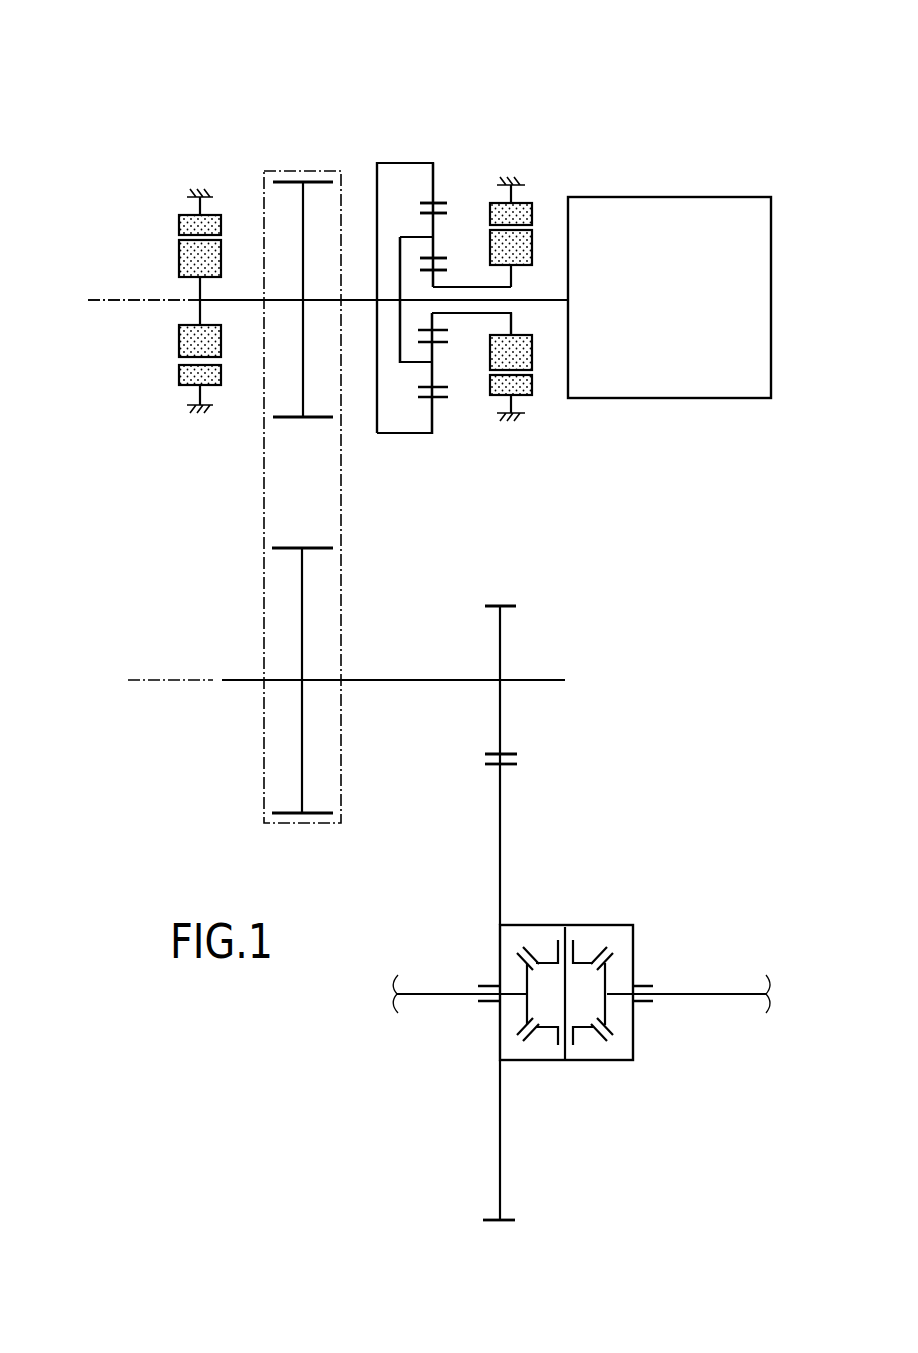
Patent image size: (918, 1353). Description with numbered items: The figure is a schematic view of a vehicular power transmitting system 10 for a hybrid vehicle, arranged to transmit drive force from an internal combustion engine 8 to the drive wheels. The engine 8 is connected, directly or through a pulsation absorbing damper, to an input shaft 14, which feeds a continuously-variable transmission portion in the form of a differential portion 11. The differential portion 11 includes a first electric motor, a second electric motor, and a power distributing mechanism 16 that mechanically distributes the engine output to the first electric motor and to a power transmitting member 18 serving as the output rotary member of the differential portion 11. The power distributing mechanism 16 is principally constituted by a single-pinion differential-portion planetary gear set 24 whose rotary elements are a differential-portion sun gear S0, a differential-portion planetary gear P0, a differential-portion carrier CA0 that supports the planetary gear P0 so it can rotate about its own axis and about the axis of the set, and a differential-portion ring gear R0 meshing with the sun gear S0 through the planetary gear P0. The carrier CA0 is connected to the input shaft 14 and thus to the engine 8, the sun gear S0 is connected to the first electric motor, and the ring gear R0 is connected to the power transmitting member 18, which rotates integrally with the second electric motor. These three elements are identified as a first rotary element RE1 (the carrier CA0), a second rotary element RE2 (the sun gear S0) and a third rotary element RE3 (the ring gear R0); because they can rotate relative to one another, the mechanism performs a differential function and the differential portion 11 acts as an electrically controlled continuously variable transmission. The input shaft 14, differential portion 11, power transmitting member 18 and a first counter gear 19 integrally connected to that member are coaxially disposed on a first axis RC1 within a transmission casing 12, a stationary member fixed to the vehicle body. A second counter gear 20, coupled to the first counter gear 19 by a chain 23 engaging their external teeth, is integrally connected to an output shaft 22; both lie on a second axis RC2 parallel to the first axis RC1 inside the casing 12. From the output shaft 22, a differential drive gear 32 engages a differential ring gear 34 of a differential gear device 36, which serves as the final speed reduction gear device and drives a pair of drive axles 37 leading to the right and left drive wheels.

The internal combustion engine 8 is at (675, 213).
The vehicular power transmitting system 10 is at (72, 38).
The differential portion 11 is at (545, 56).
The transmission casing 12 is at (203, 192).
The input shaft 14 is at (560, 299).
The power distributing mechanism 16 is at (435, 81).
The power transmitting member 18 is at (362, 299).
The first counter gear 19 is at (284, 414).
The second counter gear 20 is at (322, 552).
The output shaft 22 is at (374, 682).
The chain 23 is at (264, 505).
The differential-portion planetary gear set 24 is at (433, 145).
The differential drive gear 32 is at (510, 752).
The differential ring gear 34 is at (508, 766).
The differential gear device 36 is at (549, 1090).
The drive axles 37 is at (448, 996).
The first axis RC1 is at (115, 299).
The second axis RC2 is at (160, 680).
The differential-portion ring gear R0 is at (432, 199).
The differential-portion carrier CA0 is at (409, 237).
The differential-portion planetary gear P0 is at (441, 218).
The differential-portion sun gear S0 is at (441, 270).
The first rotary element RE1 is at (410, 369).
The second rotary element RE2 is at (473, 320).
The third rotary element RE3 is at (412, 441).